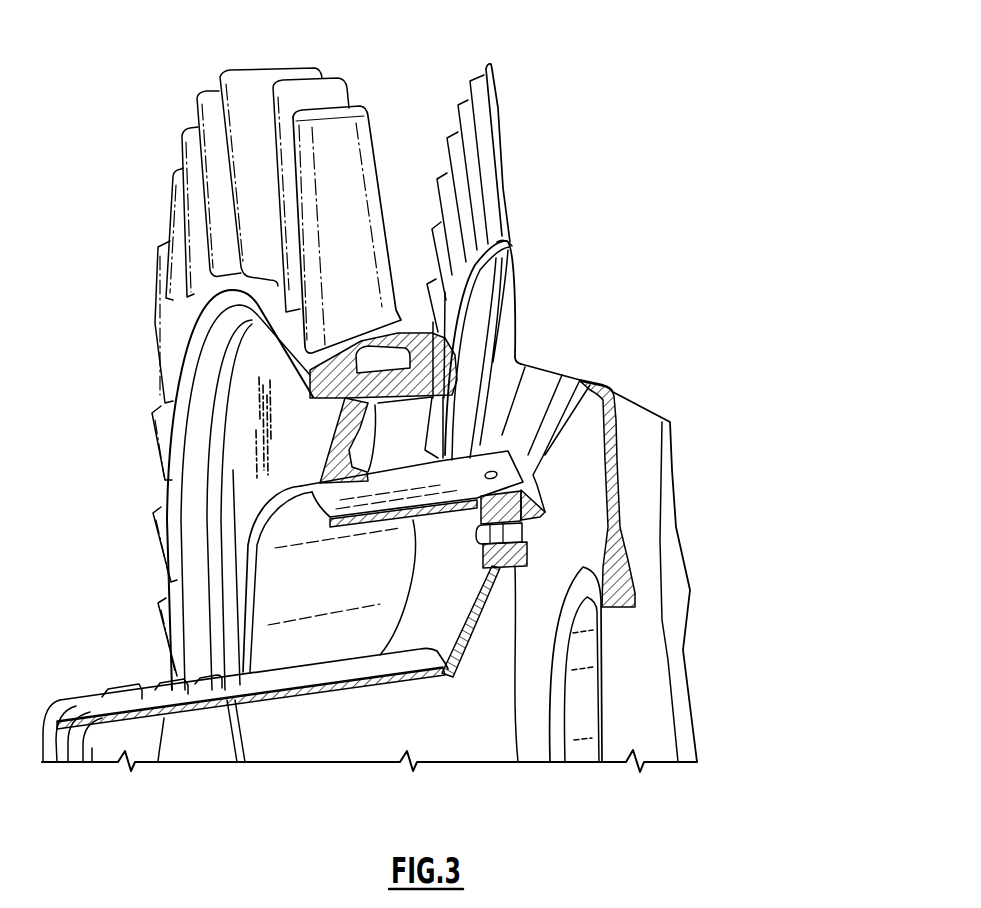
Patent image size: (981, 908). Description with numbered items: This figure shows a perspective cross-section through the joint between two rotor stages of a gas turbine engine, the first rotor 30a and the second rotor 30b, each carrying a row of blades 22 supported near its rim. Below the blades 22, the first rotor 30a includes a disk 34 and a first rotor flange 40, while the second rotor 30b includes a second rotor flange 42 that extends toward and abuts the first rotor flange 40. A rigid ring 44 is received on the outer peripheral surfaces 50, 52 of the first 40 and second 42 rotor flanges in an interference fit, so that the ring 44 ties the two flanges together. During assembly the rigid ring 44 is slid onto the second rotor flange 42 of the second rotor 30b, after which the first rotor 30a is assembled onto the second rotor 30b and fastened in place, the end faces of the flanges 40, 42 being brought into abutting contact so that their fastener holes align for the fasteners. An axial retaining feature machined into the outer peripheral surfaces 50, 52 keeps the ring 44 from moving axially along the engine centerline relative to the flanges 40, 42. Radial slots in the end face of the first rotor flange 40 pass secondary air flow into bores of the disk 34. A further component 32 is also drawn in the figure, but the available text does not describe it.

The blades 22 is at (173, 177).
The first rotor 30a is at (131, 369).
The second rotor 30b is at (460, 90).
The first seal land 32 is at (163, 678).
The disk 34 is at (253, 535).
The first rotor flange 40 is at (470, 612).
The second rotor flange 42 is at (530, 552).
The rigid ring 44 is at (483, 460).
The outer peripheral surface 50 is at (478, 531).
The outer peripheral surface 52 is at (533, 509).